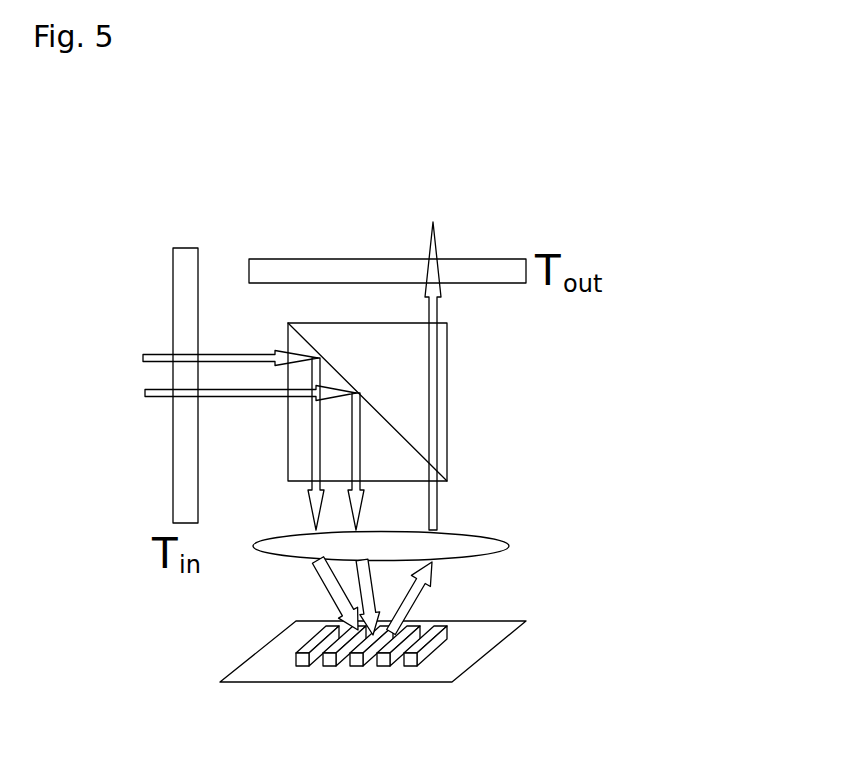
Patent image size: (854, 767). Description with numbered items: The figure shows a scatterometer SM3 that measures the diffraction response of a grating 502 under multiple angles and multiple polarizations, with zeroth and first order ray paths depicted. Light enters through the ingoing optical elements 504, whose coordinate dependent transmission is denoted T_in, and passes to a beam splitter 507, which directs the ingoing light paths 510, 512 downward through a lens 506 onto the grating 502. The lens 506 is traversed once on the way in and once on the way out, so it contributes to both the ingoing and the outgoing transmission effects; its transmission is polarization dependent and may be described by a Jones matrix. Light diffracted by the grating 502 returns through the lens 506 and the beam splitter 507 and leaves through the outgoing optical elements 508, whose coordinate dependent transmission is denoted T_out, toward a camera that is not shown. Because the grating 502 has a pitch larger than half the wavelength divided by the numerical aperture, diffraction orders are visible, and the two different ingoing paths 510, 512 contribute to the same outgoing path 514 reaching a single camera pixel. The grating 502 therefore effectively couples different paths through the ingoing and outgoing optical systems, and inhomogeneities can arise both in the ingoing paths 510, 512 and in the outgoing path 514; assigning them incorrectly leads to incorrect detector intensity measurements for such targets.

The grating 502 is at (468, 645).
The ingoing optical elements 504 is at (175, 279).
The lens 506 is at (482, 535).
The beam splitter 507 is at (447, 418).
The outgoing optical elements 508 is at (458, 263).
The ingoing light path 510 is at (157, 355).
The ingoing light path 512 is at (155, 398).
The outgoing light path 514 is at (437, 310).
The scatterometer SM3 is at (667, 181).